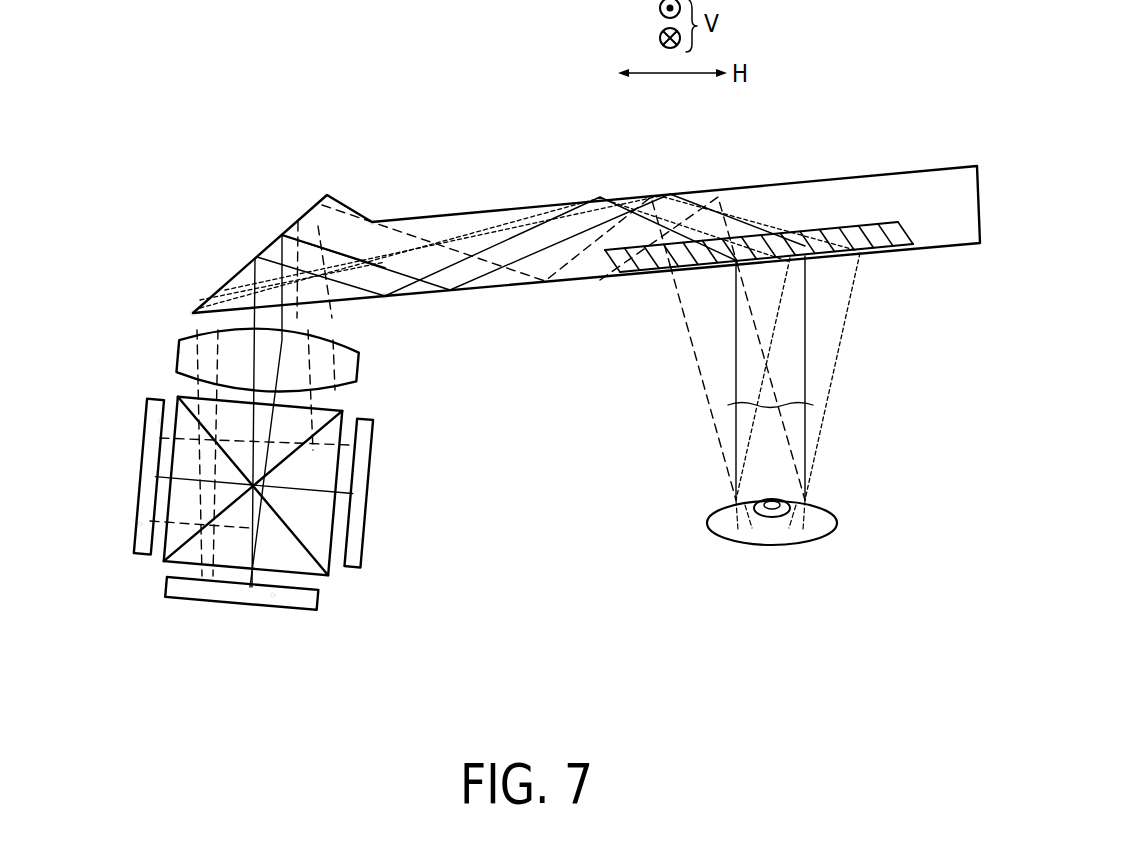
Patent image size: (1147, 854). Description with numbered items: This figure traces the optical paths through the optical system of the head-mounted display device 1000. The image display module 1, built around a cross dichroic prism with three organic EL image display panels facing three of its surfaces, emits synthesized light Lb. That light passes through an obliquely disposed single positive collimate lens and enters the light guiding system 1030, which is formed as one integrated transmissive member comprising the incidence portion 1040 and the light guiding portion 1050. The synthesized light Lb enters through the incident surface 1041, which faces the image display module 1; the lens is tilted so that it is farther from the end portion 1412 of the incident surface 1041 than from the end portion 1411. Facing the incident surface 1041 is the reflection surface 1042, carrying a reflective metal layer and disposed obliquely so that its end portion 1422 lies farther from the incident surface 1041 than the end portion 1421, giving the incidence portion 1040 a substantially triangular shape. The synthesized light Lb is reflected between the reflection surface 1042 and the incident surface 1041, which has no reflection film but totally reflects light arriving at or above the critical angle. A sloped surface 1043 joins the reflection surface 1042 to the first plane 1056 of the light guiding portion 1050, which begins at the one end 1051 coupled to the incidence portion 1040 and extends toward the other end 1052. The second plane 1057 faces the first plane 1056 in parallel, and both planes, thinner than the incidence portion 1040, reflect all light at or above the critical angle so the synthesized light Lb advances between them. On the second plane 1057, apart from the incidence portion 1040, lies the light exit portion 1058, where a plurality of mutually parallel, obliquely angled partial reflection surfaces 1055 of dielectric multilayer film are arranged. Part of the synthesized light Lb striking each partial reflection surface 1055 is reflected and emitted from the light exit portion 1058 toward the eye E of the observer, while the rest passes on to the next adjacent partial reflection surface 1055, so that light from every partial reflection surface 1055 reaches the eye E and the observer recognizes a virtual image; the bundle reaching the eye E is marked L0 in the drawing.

The head-mounted display device 1000 is at (985, 43).
The light guiding system 1030 is at (543, 200).
The incidence portion 1040 is at (308, 207).
The incident surface 1041 is at (317, 307).
The reflection surface 1042 is at (290, 227).
The sloped surface 1043 is at (356, 217).
The light guiding portion 1050 is at (458, 222).
The one end 1051 is at (372, 221).
The other end 1052 is at (976, 165).
The partial reflection surface 1055 is at (873, 231).
The first plane 1056 is at (730, 190).
The second plane 1057 is at (592, 278).
The light exit portion 1058 is at (881, 262).
The end portion 1411 is at (192, 312).
The end portion 1412 is at (370, 299).
The end portion 1421 is at (197, 306).
The end portion 1422 is at (327, 194).
The image display module 1 is at (380, 625).
The synthesized light Lb is at (265, 274).
The optical axis light L0 is at (770, 407).
The eye of observer E is at (772, 512).